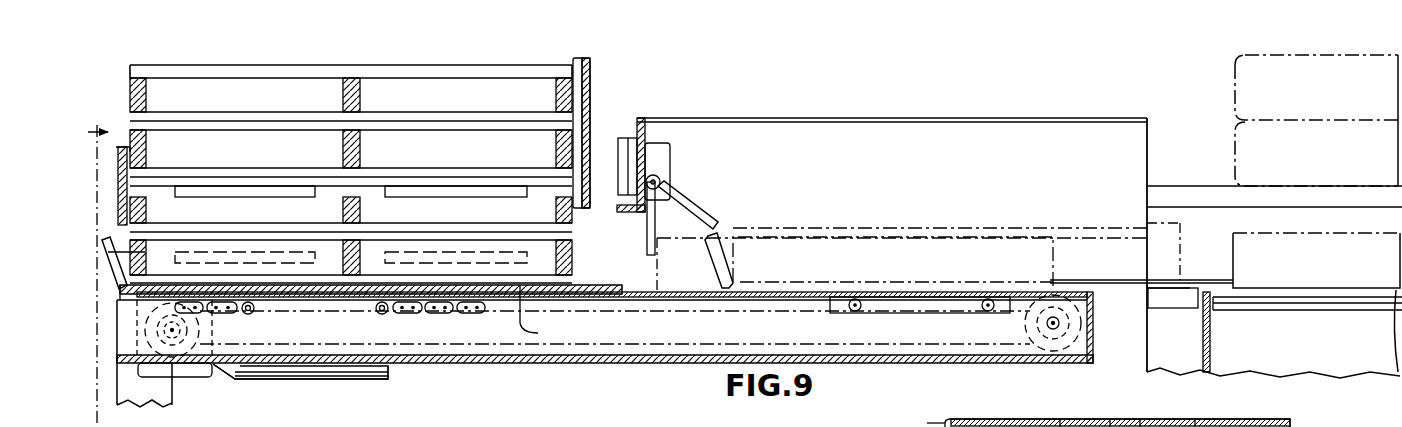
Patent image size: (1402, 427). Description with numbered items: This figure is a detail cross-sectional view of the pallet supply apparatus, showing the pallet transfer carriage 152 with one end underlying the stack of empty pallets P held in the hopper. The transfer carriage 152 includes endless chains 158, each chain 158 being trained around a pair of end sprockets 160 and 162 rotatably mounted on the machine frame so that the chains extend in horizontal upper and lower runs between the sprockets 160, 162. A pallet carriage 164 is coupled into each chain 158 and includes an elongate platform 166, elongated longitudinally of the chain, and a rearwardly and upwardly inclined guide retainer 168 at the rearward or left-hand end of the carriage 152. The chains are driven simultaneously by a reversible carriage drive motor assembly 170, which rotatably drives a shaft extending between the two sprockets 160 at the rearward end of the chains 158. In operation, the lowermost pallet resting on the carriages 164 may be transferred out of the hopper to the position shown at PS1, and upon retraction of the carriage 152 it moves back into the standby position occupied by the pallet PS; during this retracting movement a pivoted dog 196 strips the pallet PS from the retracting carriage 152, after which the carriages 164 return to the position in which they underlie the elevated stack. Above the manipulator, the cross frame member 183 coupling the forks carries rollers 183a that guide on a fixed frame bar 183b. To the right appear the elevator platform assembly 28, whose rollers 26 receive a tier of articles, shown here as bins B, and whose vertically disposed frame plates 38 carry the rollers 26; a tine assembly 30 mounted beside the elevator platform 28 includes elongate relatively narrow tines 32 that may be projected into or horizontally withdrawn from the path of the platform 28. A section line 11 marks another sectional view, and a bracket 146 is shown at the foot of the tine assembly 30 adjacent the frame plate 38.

The section line 11 is at (114, 274).
The empty pallet P is at (478, 159).
The bins B is at (1330, 95).
The standby pallet PS is at (697, 235).
The transferred pallet position PS1 is at (1172, 246).
The rollers 26 is at (1373, 306).
The elevator platform assembly 28 is at (1176, 352).
The tine assembly 30 is at (1027, 147).
The tines 32 is at (1191, 198).
The frame plate 38 is at (1212, 345).
The bracket 146 is at (1183, 306).
The pallet transfer carriage 152 is at (333, 283).
The endless chain 158 is at (448, 305).
The end sprocket 160 is at (196, 363).
The end sprocket 162 is at (1046, 324).
The pallet carriage 164 is at (363, 312).
The elongate platform 166 is at (612, 316).
The guide retainer 168 is at (145, 252).
The carriage drive motor assembly 170 is at (302, 378).
The cross frame member 183 is at (1015, 420).
The rollers 183a is at (1193, 410).
The fixed frame bar 183b is at (1110, 419).
The pivoted dog 196 is at (643, 232).